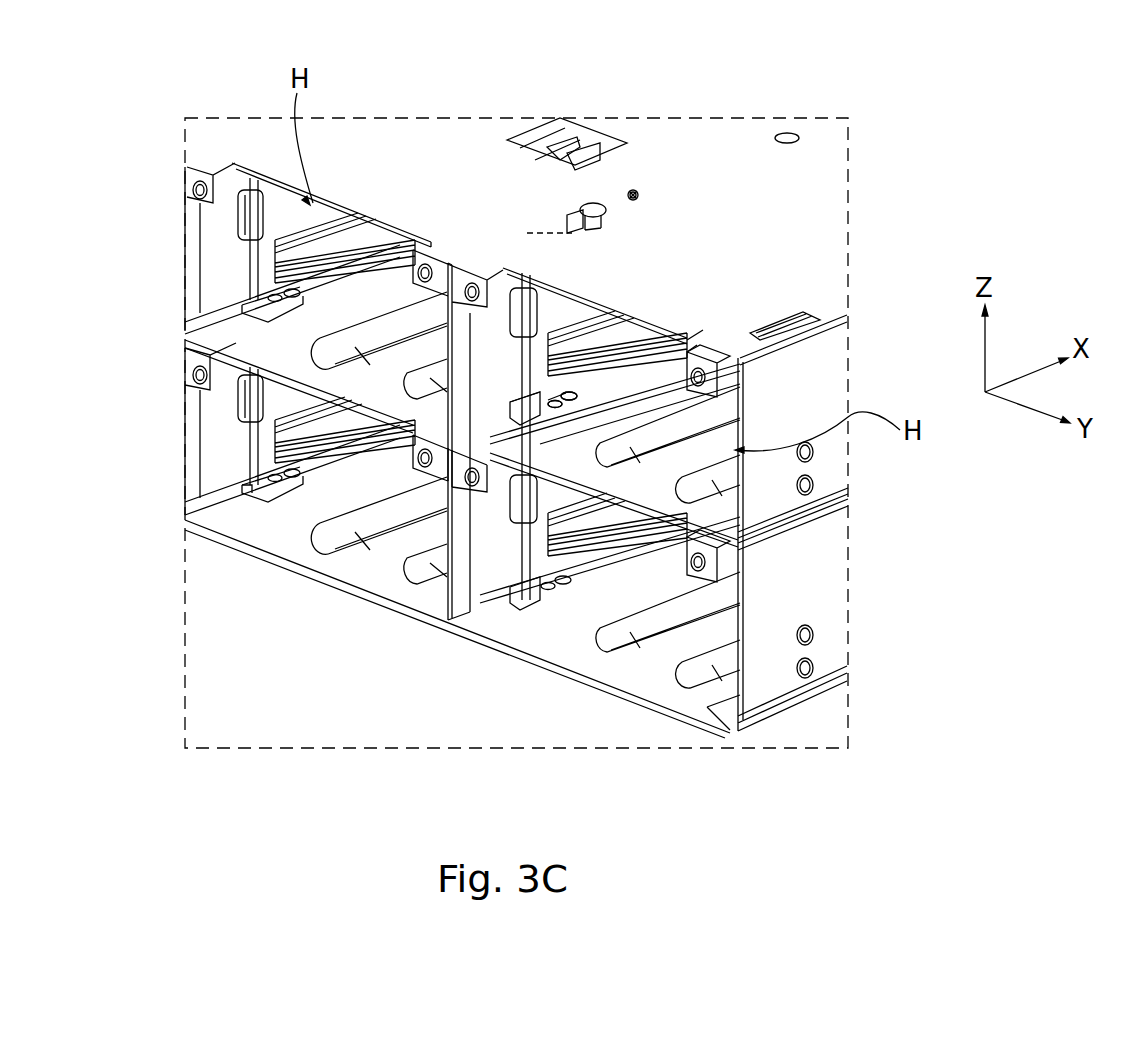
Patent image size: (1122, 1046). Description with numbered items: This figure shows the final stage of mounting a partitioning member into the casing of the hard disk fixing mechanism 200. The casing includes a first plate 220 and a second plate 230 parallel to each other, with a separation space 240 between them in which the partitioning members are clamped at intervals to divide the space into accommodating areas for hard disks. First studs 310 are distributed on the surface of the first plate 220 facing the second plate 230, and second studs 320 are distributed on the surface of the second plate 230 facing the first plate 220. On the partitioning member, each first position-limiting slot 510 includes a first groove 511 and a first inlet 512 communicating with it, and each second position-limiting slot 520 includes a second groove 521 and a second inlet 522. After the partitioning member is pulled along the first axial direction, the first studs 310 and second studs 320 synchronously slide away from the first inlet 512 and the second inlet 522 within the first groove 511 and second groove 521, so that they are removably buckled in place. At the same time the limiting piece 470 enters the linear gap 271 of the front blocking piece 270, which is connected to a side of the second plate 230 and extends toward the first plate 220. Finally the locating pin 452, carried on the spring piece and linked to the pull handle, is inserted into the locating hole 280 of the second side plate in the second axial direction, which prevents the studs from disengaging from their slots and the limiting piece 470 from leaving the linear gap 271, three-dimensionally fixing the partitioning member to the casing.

The hard disk fixing mechanism 200 is at (978, 52).
The second plate 230 is at (207, 160).
The separation space 240 is at (199, 265).
The first plate 220 is at (217, 342).
The limiting piece 470 is at (488, 393).
The front blocking piece 270 is at (434, 268).
The linear gap 271 is at (454, 280).
The second position-limiting slot 520 is at (603, 72).
The second inlet 522 is at (560, 223).
The second groove 521 is at (575, 213).
The second stud 320 is at (590, 200).
The locating pin 452 is at (634, 192).
The locating hole 280 is at (642, 198).
The first stud 310 is at (572, 405).
The first inlet 512 is at (530, 408).
The first groove 511 is at (568, 407).
The first position-limiting slot 510 is at (537, 802).